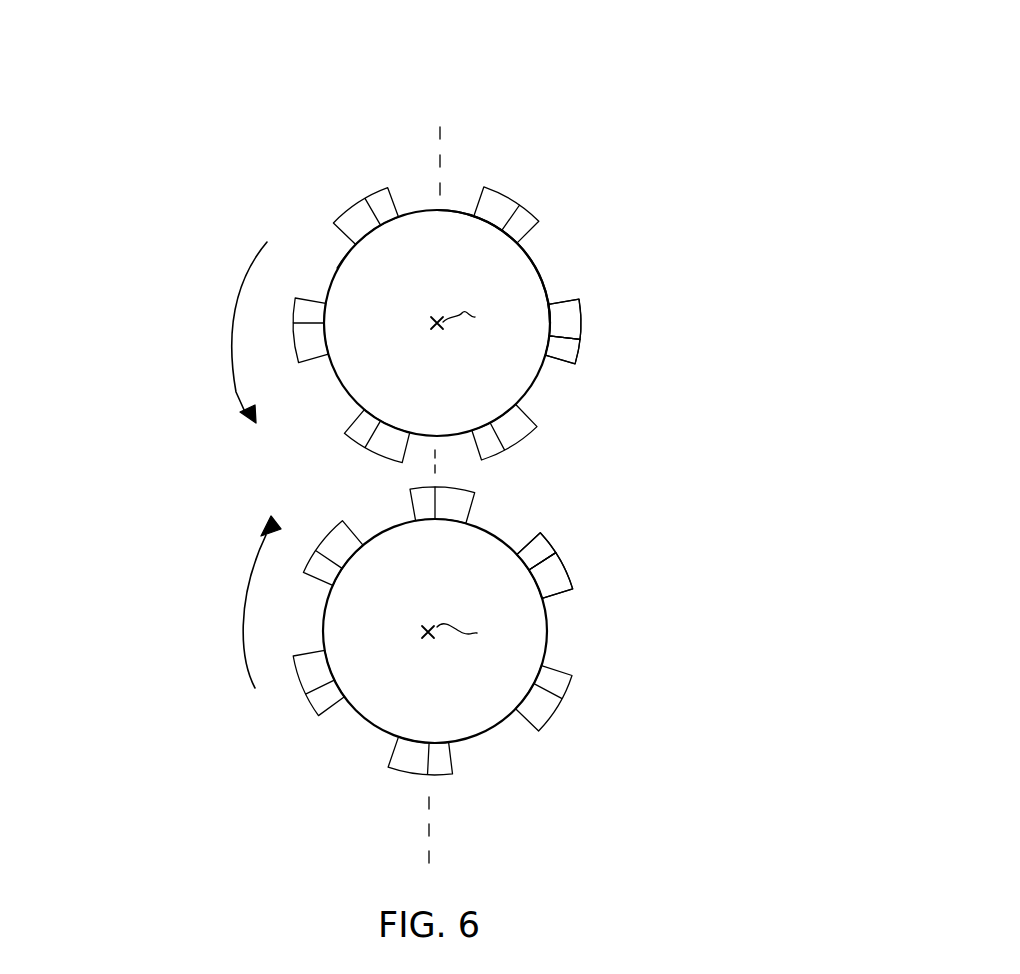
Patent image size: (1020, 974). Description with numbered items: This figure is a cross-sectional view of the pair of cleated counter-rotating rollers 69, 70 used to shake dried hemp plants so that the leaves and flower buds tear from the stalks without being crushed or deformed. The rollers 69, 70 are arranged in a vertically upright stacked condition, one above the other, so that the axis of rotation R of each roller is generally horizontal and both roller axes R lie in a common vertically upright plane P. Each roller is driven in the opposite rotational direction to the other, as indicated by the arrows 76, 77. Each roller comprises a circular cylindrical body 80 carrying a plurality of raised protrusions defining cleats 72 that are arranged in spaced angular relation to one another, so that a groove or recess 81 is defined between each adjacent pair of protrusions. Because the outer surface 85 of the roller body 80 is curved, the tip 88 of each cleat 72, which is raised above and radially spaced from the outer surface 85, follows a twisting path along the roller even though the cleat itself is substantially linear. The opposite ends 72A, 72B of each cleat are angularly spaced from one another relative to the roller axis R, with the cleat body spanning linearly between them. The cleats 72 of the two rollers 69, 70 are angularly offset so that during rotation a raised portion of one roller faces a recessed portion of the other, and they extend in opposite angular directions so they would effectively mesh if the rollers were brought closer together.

The cleated roller 69 is at (577, 152).
The cleated roller 70 is at (637, 753).
The cleat 72 is at (598, 306).
The cleat end 72A is at (570, 282).
The cleat end 72B is at (568, 348).
The arrow 76 is at (228, 348).
The arrow 77 is at (238, 595).
The circular cylindrical body 80 is at (421, 230).
The groove or recess 81 is at (549, 257).
The outer surface 85 is at (337, 268).
The tip 88 is at (352, 212).
The plane P is at (446, 130).
The axis of rotation R is at (463, 477).